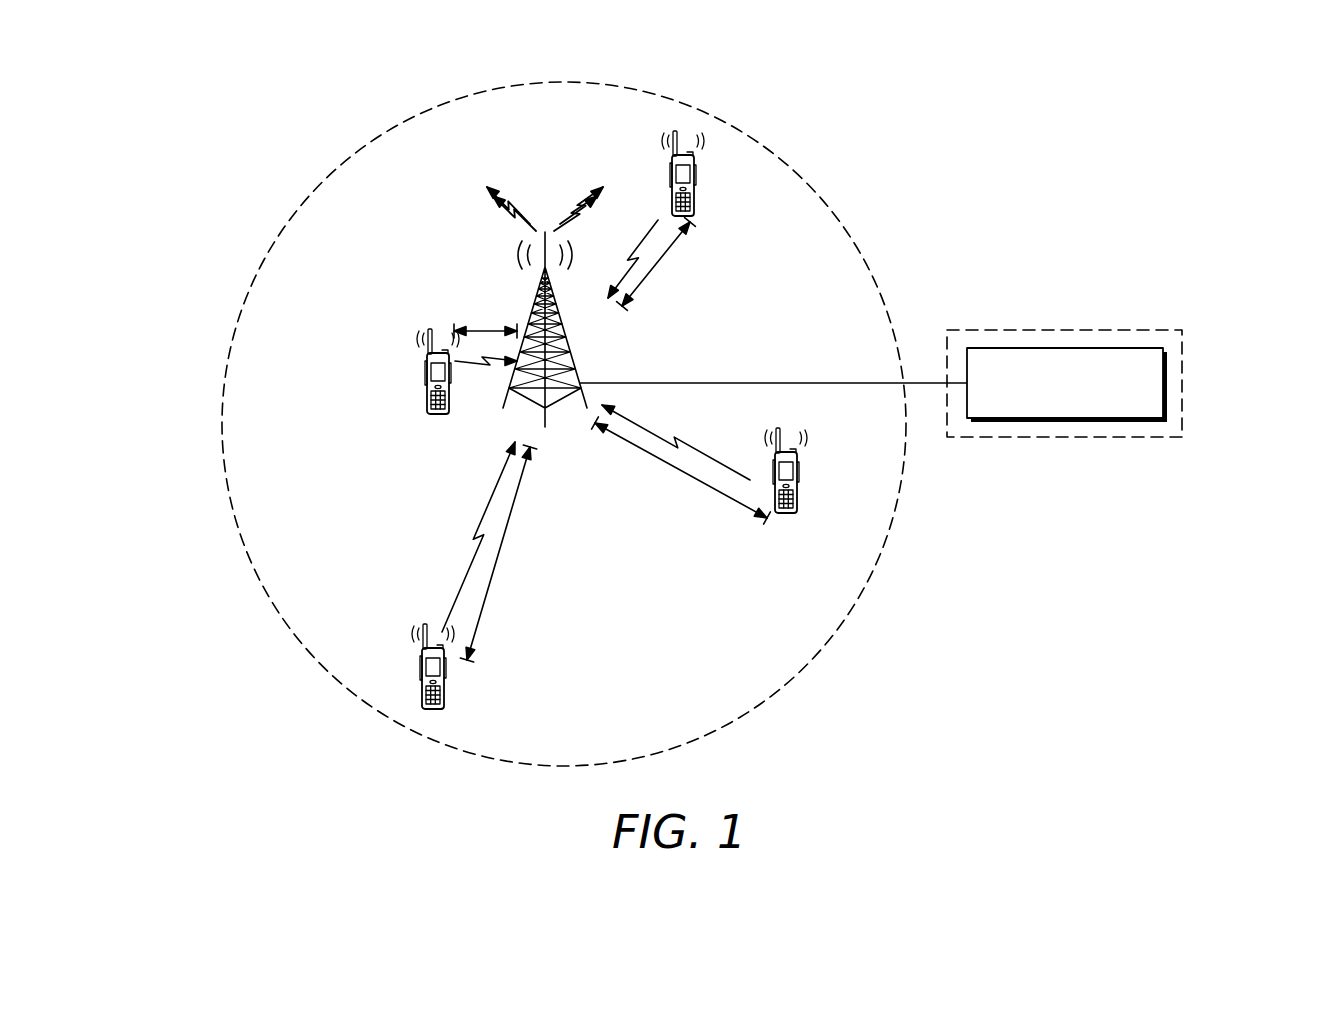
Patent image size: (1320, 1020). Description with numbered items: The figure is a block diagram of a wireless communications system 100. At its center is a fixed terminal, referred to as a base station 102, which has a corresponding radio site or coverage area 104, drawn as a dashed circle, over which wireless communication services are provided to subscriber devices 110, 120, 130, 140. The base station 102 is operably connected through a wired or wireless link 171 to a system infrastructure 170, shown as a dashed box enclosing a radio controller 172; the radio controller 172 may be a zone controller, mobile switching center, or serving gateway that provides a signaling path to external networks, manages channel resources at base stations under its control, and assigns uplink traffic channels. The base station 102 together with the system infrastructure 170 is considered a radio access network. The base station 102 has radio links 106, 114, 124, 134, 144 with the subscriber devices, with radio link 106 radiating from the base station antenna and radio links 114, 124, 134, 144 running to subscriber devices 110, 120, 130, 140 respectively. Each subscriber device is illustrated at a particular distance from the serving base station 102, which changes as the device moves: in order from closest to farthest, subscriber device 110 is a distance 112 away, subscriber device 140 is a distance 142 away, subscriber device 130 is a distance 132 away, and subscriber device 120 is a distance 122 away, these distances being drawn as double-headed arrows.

The system 100 is at (238, 105).
The fixed terminal 102 is at (567, 370).
The radio site 104 is at (836, 212).
The radio link 106 is at (568, 201).
The subscriber device 110 is at (427, 396).
The distance 112 is at (488, 330).
The radio link 114 is at (473, 364).
The subscriber device 120 is at (445, 700).
The distance 122 is at (500, 555).
The radio link 124 is at (463, 568).
The subscriber device 130 is at (798, 498).
The distance 132 is at (680, 470).
The radio link 134 is at (703, 452).
The subscriber device 140 is at (696, 205).
The distance 142 is at (648, 275).
The radio link 144 is at (640, 240).
The system infrastructure 170 is at (1015, 330).
The link 171 is at (770, 383).
The radio controller 172 is at (1167, 382).